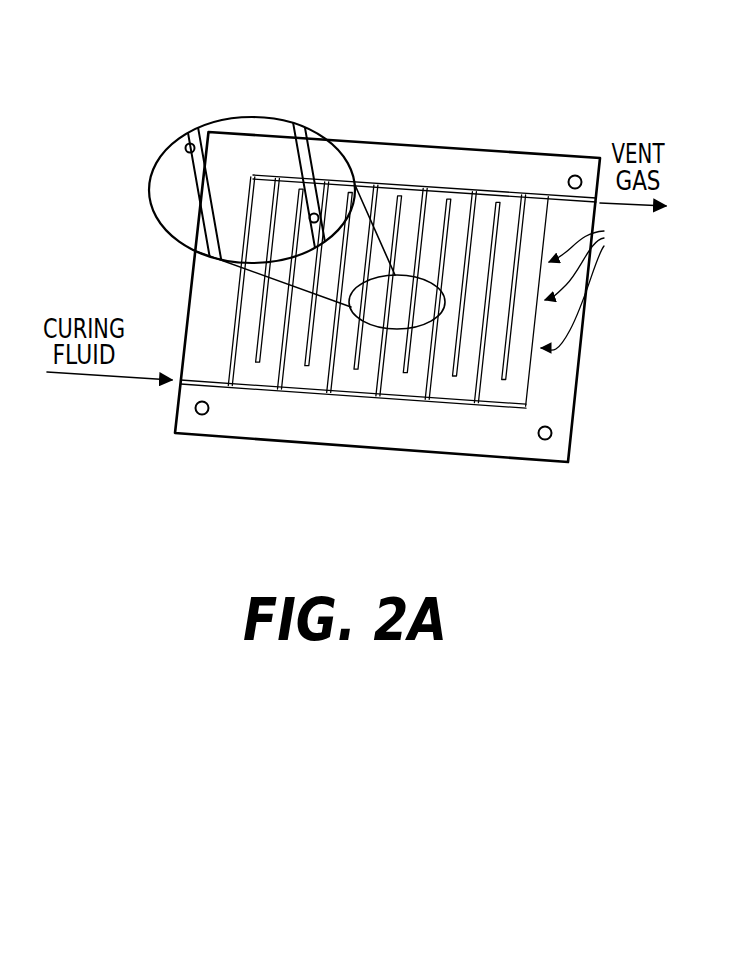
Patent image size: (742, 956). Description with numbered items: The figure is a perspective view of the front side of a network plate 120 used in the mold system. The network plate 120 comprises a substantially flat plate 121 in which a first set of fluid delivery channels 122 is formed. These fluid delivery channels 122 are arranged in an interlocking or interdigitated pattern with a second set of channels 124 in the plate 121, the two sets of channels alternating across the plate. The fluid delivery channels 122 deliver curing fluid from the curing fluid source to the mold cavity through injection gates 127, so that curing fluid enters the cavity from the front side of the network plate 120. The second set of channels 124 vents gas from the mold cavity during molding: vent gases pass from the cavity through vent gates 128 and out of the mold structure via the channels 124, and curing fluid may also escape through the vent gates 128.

The network plate 120 is at (447, 480).
The substantially flat plate 121 is at (569, 402).
The fluid delivery channels 122 is at (398, 203).
The second set of channels 124 is at (478, 188).
The injection gates 127 is at (595, 285).
The vent gates 128 is at (523, 340).